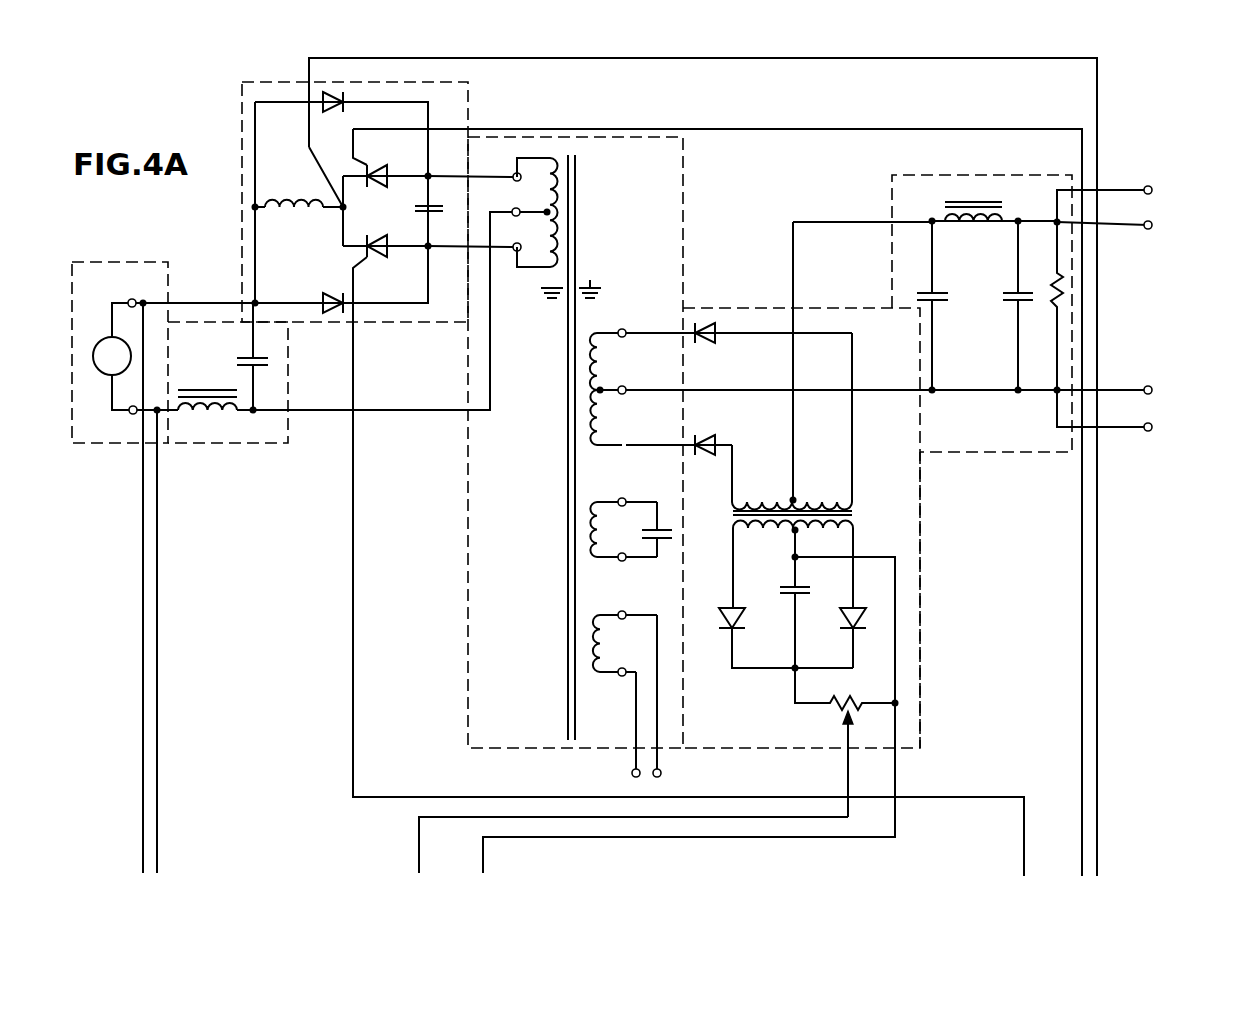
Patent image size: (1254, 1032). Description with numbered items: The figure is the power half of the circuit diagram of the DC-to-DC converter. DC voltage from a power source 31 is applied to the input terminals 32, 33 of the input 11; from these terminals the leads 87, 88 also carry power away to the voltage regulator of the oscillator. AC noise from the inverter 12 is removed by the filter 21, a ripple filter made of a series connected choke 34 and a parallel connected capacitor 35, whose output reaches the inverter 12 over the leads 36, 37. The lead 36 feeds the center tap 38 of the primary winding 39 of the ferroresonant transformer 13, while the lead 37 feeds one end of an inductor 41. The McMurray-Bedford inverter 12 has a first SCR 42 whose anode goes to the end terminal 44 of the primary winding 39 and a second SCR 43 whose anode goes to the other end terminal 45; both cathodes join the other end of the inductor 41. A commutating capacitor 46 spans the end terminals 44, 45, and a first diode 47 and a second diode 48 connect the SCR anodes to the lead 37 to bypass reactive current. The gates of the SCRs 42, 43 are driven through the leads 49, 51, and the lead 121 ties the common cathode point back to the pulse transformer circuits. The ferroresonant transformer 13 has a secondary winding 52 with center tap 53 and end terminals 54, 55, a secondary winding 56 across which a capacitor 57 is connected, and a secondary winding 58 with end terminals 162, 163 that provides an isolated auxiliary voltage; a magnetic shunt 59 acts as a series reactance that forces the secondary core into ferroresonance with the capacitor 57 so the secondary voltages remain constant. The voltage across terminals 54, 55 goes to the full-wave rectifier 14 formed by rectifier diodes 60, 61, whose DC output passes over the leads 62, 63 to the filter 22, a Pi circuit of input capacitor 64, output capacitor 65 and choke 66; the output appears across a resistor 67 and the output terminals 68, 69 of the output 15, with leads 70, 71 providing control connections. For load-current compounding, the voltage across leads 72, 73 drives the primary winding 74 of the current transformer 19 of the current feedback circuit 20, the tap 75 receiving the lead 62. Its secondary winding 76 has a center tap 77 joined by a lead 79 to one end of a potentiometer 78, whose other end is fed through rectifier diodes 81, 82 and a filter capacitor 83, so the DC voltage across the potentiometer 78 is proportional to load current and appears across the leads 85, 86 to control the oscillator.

The input 11 is at (170, 248).
The inverter 12 is at (242, 82).
The ferroresonant transformer 13 is at (532, 132).
The full-wave rectifier 14 is at (758, 308).
The output 15 is at (1168, 305).
The current transformer 19 is at (733, 515).
The current feedback circuit 20 is at (922, 513).
The filter 21 is at (180, 444).
The filter 22 is at (1056, 454).
The power source 31 is at (107, 338).
The input terminal 32 is at (127, 300).
The input terminal 33 is at (129, 414).
The choke 34 is at (175, 390).
The capacitor 35 is at (245, 355).
The lead 36 is at (332, 410).
The lead 37 is at (205, 302).
The center tap 38 is at (545, 214).
The primary winding 39 is at (536, 200).
The inductor 41 is at (296, 200).
The first SCR 42 is at (370, 166).
The second SCR 43 is at (370, 259).
The end terminal 44 is at (510, 172).
The end terminal 45 is at (514, 252).
The commutating capacitor 46 is at (411, 210).
The first diode 47 is at (326, 112).
The second diode 48 is at (317, 295).
The lead 49 is at (798, 129).
The lead 51 is at (353, 480).
The secondary winding 52 is at (600, 349).
The center tap 53 is at (622, 386).
The end terminal 54 is at (622, 440).
The end terminal 55 is at (622, 332).
The secondary winding 56 is at (600, 526).
The capacitor 57 is at (652, 539).
The secondary winding 58 is at (602, 651).
The magnetic shunt 59 is at (596, 270).
The rectifier diode 60 is at (707, 346).
The rectifier diode 61 is at (698, 436).
The lead 62 is at (794, 284).
The lead 63 is at (824, 390).
The input capacitor 64 is at (942, 290).
The output capacitor 65 is at (1007, 289).
The choke 66 is at (991, 224).
The resistor 67 is at (1057, 288).
The output terminal 68 is at (1147, 229).
The output terminal 69 is at (1146, 386).
The lead 70 is at (1146, 429).
The lead 71 is at (1146, 186).
The lead 72 is at (852, 356).
The lead 73 is at (732, 445).
The primary winding 74 is at (772, 498).
The tap 75 is at (829, 498).
The secondary winding 76 is at (768, 532).
The center tap 77 is at (790, 544).
The potentiometer 78 is at (828, 702).
The lead 79 is at (895, 650).
The rectifier diode 81 is at (728, 607).
The rectifier diode 82 is at (853, 607).
The filter capacitor 83 is at (780, 594).
The lead 85 is at (843, 778).
The lead 86 is at (894, 778).
The lead 87 is at (143, 736).
The lead 88 is at (157, 748).
The lead 121 is at (1097, 780).
The end terminal 162 is at (631, 772).
The end terminal 163 is at (661, 772).